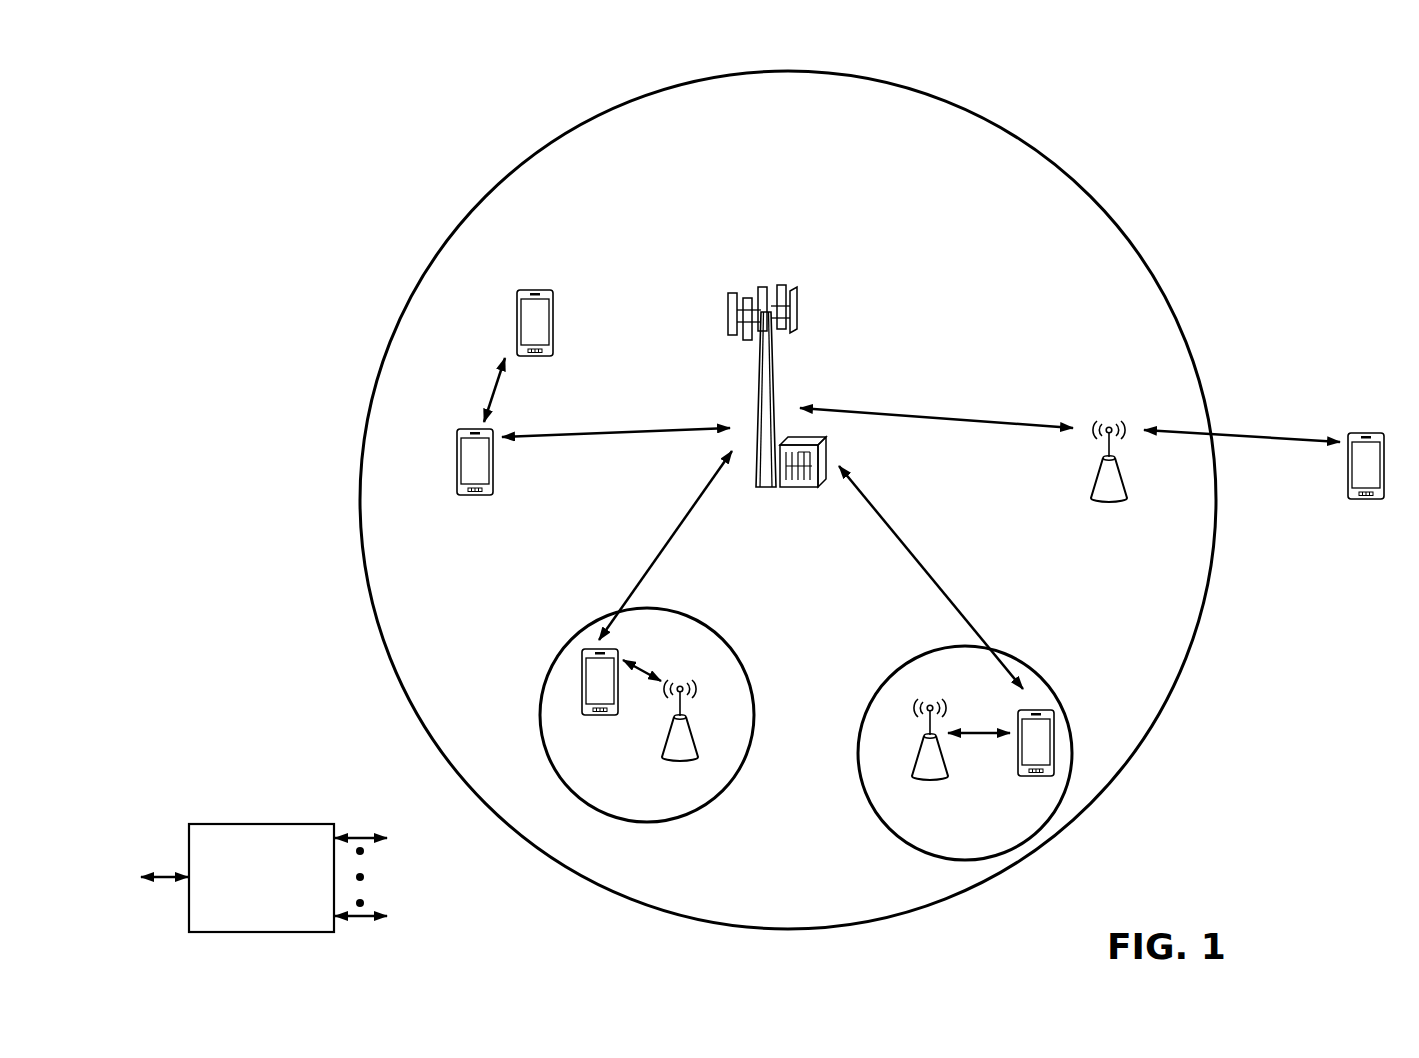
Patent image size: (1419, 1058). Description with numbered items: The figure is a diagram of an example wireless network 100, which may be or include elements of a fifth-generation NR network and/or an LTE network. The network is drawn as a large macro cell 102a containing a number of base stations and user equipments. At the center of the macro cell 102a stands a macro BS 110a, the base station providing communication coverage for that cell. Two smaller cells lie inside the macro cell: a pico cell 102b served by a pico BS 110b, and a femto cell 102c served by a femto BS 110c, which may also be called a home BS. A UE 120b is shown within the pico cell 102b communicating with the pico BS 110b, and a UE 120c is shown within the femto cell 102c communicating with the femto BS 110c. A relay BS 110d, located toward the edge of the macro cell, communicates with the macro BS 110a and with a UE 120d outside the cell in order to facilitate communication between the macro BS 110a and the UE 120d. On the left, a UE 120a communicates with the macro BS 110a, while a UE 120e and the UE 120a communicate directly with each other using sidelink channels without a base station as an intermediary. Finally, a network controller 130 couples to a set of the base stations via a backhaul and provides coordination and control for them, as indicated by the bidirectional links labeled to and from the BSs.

The wireless network 100 is at (196, 66).
The macro cell 102a is at (1072, 179).
The pico cell 102b is at (742, 648).
The femto cell 102c is at (900, 665).
The macro BS 110a is at (779, 281).
The pico BS 110b is at (702, 747).
The femto BS 110c is at (914, 763).
The relay BS 110d is at (1110, 424).
The UE 120a is at (457, 460).
The UE 120b is at (587, 716).
The UE 120c is at (1021, 777).
The UE 120d is at (1381, 433).
The UE 120e is at (517, 307).
The network controller 130 is at (259, 824).